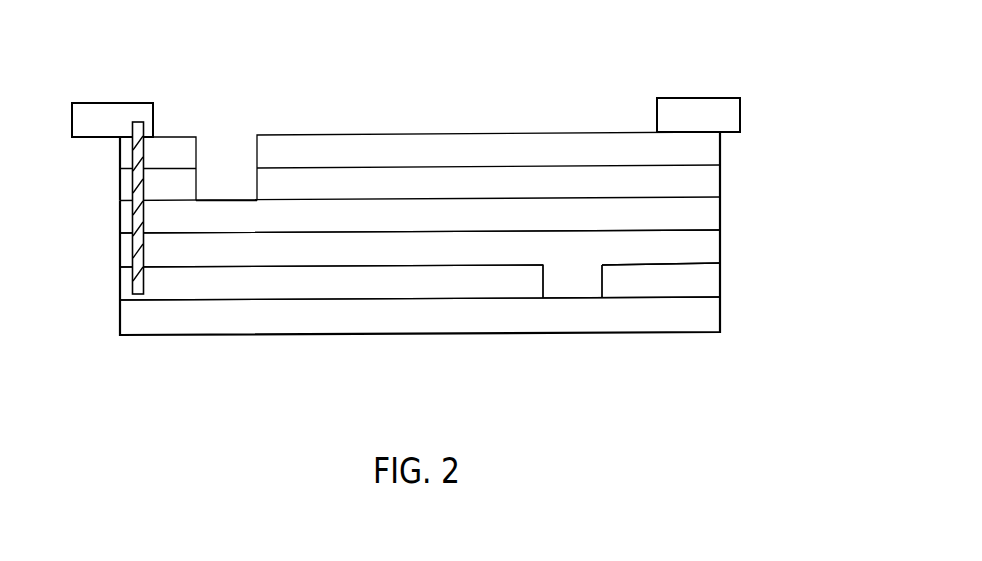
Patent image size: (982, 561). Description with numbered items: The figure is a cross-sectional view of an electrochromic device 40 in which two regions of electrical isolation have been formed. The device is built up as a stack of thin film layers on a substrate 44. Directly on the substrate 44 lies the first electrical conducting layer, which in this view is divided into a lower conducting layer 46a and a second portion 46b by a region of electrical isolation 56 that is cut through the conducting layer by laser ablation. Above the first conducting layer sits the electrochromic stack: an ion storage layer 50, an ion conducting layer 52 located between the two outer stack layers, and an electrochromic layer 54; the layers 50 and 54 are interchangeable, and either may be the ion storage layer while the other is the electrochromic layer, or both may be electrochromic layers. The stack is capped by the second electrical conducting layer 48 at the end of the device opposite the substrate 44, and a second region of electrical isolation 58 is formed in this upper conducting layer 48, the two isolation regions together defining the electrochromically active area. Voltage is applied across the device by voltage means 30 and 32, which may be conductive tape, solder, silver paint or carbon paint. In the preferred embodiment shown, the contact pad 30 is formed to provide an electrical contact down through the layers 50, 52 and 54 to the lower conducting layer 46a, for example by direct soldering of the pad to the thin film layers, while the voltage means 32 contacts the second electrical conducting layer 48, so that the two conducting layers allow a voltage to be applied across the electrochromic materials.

The voltage means 30 is at (122, 118).
The voltage means 32 is at (692, 115).
The electrochromic device 40 is at (773, 112).
The substrate 44 is at (128, 323).
The lower conducting layer 46a is at (128, 285).
The first electrical conducting layer portion 46b is at (705, 282).
The second electrical conducting layer 48 is at (127, 153).
The ion storage layer 50 is at (693, 247).
The ion conducting layer 52 is at (695, 218).
The electrochromic layer 54 is at (703, 182).
The region of electrical isolation 56 is at (570, 276).
The region of electrical isolation 58 is at (232, 166).